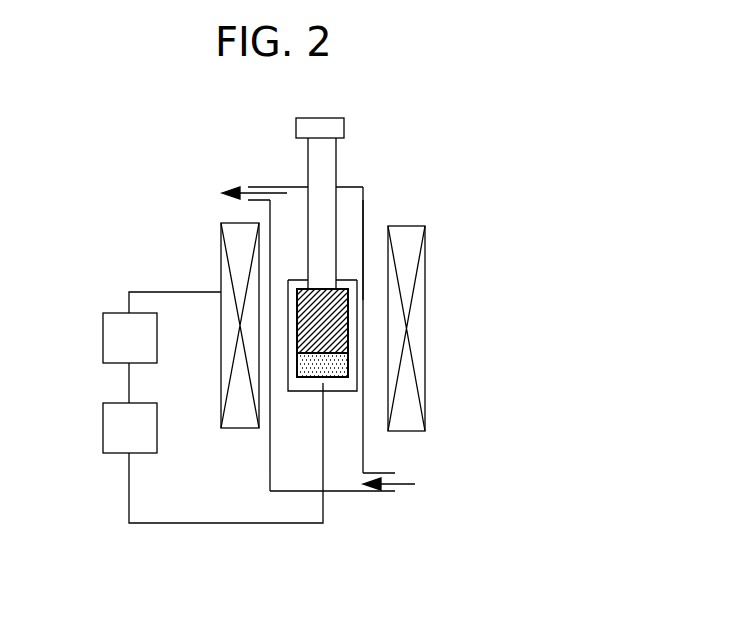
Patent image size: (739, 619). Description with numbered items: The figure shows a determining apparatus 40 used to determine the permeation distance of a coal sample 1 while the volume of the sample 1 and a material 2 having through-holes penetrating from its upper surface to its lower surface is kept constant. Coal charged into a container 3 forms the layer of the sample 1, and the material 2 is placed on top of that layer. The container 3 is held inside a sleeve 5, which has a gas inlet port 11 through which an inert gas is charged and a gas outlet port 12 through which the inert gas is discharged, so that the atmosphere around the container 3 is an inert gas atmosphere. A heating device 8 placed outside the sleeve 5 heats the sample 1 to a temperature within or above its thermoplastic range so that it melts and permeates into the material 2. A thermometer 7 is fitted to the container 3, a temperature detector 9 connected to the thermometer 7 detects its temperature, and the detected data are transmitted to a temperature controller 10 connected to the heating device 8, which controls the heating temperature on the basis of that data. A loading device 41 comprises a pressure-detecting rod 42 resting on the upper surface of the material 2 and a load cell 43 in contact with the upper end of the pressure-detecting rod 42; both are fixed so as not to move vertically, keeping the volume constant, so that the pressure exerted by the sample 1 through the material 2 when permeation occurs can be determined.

The sample 1 is at (340, 362).
The material having through-holes 2 is at (340, 312).
The container 3 is at (338, 387).
The sleeve 5 is at (363, 206).
The thermometer 7 is at (237, 525).
The heating device 8 is at (235, 266).
The temperature detector 9 is at (112, 433).
The temperature controller 10 is at (109, 347).
The gas inlet port 11 is at (362, 493).
The gas outlet port 12 is at (263, 186).
The determining apparatus 40 is at (517, 153).
The loading device 41 is at (360, 188).
The pressure-detecting rod 42 is at (327, 148).
The load cell 43 is at (330, 123).